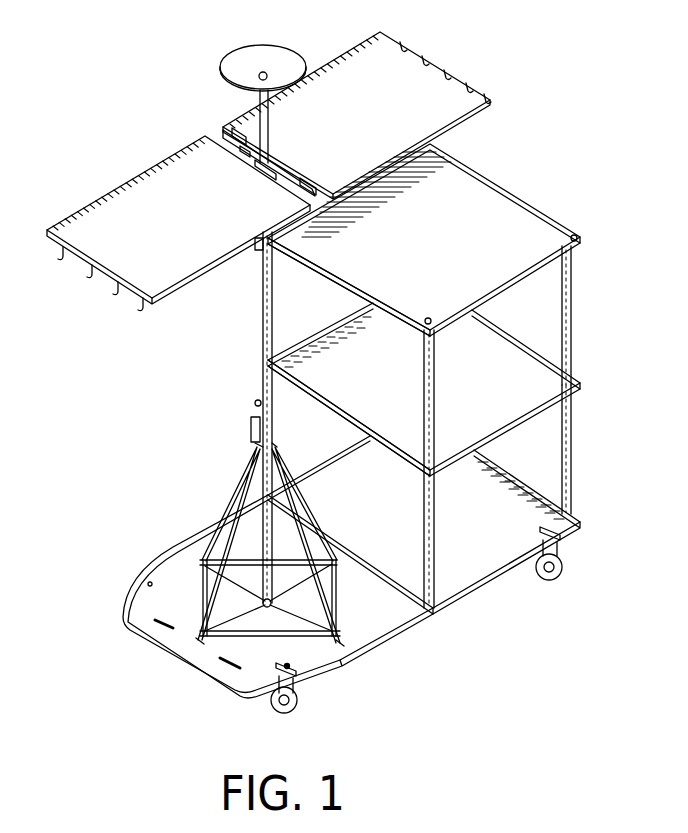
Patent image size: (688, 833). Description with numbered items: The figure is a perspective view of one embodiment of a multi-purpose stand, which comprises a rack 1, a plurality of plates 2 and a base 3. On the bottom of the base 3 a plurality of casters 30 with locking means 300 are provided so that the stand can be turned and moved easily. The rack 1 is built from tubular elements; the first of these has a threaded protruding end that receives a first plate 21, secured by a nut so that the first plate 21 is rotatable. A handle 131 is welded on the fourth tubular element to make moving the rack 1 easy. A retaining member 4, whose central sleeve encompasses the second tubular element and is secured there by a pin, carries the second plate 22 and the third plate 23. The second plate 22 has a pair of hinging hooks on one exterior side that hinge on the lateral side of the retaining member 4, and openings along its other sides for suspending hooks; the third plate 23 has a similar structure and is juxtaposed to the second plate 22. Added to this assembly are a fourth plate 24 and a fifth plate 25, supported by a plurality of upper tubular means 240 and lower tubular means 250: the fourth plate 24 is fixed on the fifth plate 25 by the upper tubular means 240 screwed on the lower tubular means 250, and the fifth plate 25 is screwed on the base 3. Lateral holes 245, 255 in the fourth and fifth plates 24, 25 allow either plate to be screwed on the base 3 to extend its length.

The rack 1 is at (253, 307).
The plates 2 is at (156, 17).
The base 3 is at (413, 620).
The retaining member 4 is at (223, 137).
The first plate 21 is at (275, 58).
The second plate 22 is at (417, 52).
The third plate 23 is at (85, 223).
The fourth plate 24 is at (510, 207).
The fifth plate 25 is at (493, 430).
The casters 30 is at (276, 691).
The handle 131 is at (250, 432).
The upper tubular means 240 is at (568, 274).
The lateral holes 245 is at (400, 318).
The lower tubular means 250 is at (572, 449).
The lateral holes 255 is at (393, 457).
The locking means 300 is at (299, 690).